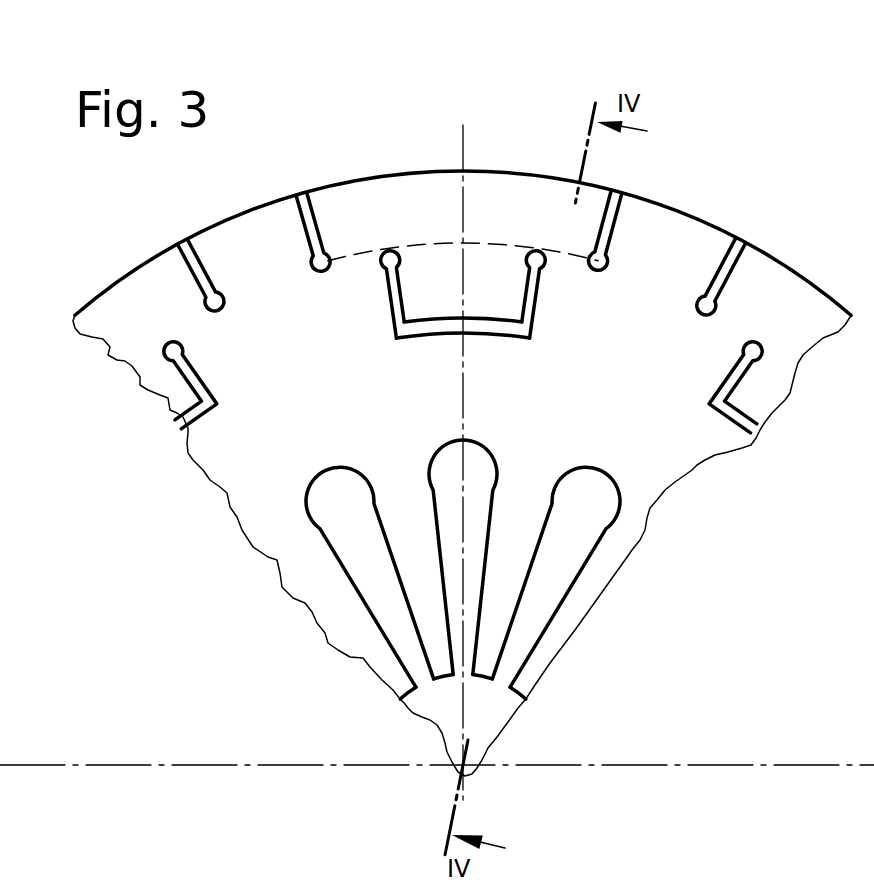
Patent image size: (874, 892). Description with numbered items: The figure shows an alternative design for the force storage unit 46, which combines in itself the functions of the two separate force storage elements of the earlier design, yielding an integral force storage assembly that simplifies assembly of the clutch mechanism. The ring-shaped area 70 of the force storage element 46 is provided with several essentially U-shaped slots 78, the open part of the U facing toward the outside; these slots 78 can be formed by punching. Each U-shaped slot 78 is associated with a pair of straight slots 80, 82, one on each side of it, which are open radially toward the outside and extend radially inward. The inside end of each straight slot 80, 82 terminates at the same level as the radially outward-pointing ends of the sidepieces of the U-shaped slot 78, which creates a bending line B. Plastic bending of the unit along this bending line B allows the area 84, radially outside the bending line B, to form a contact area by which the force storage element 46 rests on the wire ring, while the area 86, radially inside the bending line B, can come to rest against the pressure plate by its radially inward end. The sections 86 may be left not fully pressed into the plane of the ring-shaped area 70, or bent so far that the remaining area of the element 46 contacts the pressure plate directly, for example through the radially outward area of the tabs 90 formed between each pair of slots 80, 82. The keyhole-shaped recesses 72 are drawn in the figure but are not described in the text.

The force storage unit 46 is at (692, 470).
The ring-shaped area 70 is at (250, 472).
The keyhole-shaped recesses 72 is at (562, 625).
The U-shaped slot 78 is at (530, 297).
The straight slot 80 is at (300, 235).
The straight slot 82 is at (193, 280).
The area radially outside the bending line 84 is at (508, 197).
The area radially inside the bending line 86 is at (423, 287).
The tab 90 is at (202, 232).
The bending line B is at (390, 245).